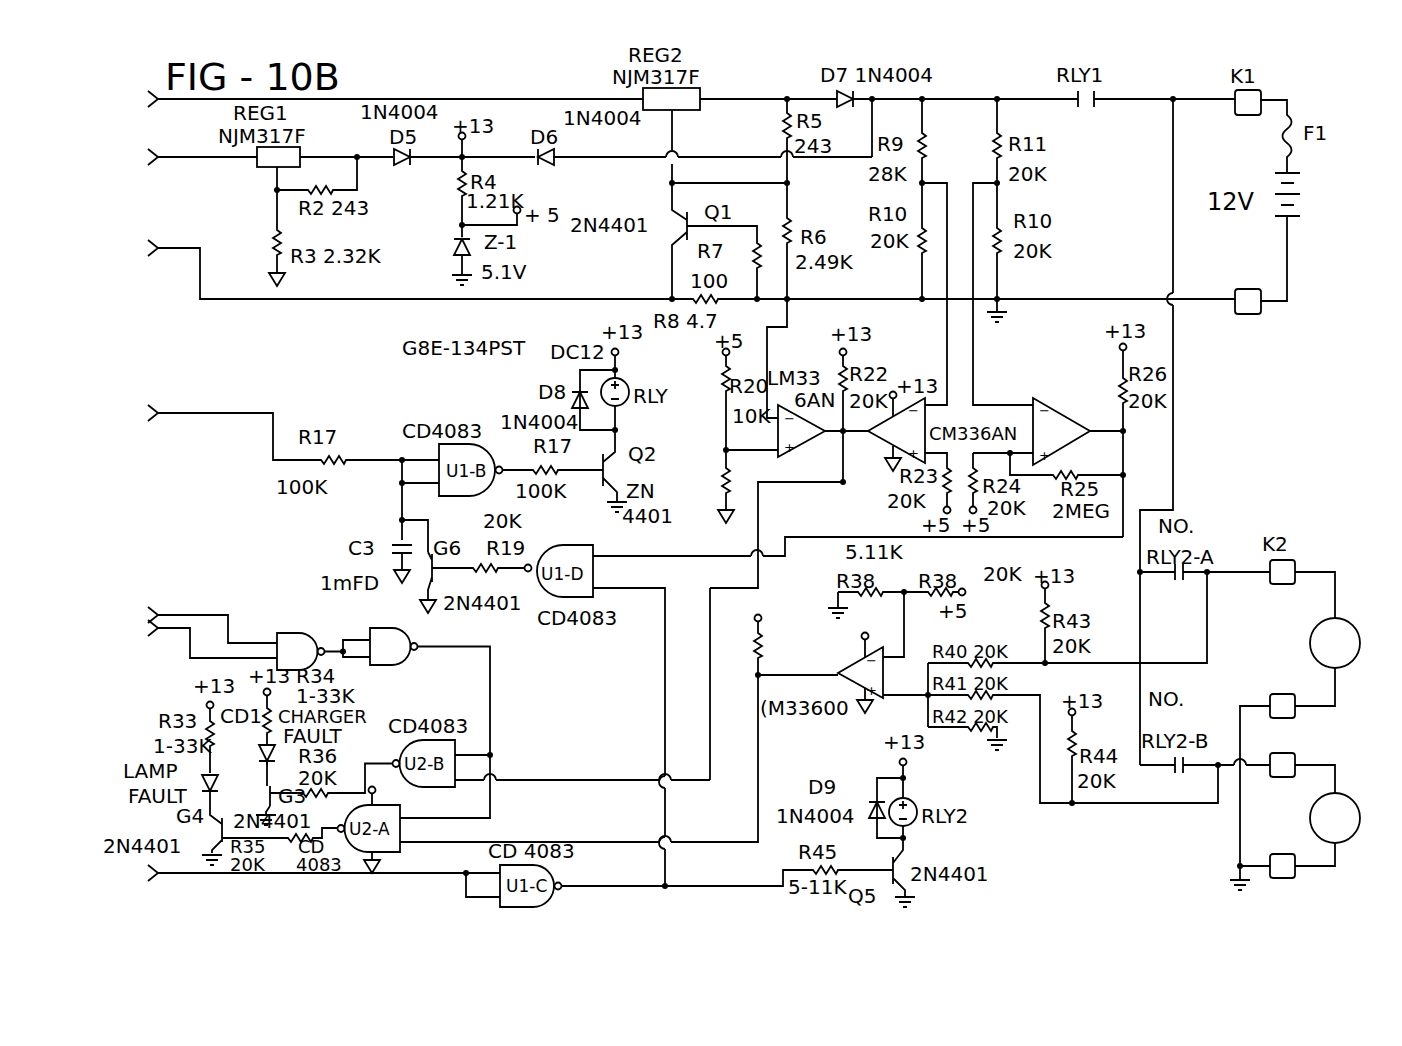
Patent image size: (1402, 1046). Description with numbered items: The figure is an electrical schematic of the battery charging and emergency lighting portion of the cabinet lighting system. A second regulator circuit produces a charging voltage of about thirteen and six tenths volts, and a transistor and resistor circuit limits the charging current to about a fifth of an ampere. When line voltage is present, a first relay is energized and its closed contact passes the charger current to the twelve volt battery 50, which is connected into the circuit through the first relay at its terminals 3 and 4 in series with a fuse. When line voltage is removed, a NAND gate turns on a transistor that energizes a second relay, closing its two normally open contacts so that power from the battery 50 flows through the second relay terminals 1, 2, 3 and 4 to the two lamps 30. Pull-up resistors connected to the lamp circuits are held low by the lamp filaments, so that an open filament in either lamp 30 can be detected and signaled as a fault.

The battery 50 is at (1308, 214).
The lamps 30 is at (1355, 614).
The relay K2 terminal 1 is at (1282, 572).
The relay K2 terminal 2 is at (1282, 706).
The relay terminal 3 is at (1265, 433).
The relay terminal 4 is at (1265, 583).